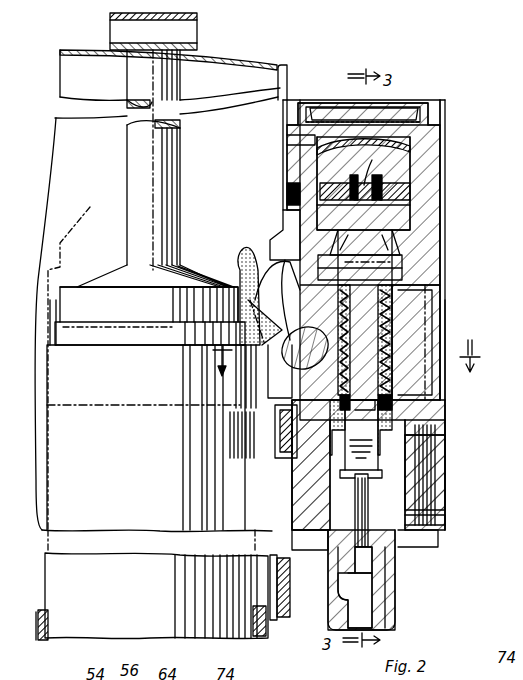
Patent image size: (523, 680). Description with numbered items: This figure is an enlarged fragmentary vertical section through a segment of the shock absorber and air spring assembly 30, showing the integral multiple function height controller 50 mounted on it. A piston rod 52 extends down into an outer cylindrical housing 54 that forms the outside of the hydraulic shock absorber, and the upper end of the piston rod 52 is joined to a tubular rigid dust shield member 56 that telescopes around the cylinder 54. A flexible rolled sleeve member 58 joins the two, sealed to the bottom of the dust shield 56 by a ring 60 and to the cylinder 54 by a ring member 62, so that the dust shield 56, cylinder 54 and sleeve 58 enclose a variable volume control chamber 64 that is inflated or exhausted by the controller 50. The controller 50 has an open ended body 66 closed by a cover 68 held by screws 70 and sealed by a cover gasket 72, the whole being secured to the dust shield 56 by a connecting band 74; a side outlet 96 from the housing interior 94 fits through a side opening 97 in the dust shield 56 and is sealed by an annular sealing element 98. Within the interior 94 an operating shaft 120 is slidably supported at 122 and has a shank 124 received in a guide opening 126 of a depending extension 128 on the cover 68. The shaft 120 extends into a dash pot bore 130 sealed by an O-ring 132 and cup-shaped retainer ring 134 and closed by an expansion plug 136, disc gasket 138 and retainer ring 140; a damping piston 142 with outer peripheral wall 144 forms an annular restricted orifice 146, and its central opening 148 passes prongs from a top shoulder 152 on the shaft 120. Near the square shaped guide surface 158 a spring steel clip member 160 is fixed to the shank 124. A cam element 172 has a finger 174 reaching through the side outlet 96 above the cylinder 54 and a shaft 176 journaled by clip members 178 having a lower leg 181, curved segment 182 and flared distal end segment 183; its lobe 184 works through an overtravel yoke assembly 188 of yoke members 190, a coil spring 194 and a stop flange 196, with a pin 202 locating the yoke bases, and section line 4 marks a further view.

The shock absorber and air spring assembly 30 is at (230, 48).
The integral multiple function height controller 50 is at (458, 159).
The piston rod 52 is at (145, 164).
The outer cylindrical housing 54 is at (78, 580).
The dust shield member 56 is at (288, 68).
The flexible rolled sleeve member 58 is at (46, 626).
The ring 60 is at (292, 580).
The ring member 62 is at (36, 640).
The control chamber 64 is at (80, 120).
The body 66 is at (442, 250).
The cover 68 is at (438, 520).
The screws 70 is at (420, 492).
The cover gasket 72 is at (438, 460).
The connecting band 74 is at (448, 398).
The housing interior 94 is at (410, 445).
The side outlet 96 is at (280, 262).
The side opening 97 is at (288, 452).
The annular sealing element 98 is at (285, 222).
The operating shaft 120 is at (395, 278).
The slidable support 122 is at (363, 207).
The shank 124 is at (374, 555).
The guide opening 126 is at (372, 580).
The depending extension 128 is at (380, 605).
The dash pot bore 130 is at (300, 140).
The O-ring 132 is at (400, 252).
The cup-shaped retainer ring 134 is at (338, 264).
The expansion plug 136 is at (344, 138).
The disc gasket 138 is at (425, 128).
The cup-shaped retainer ring 140 is at (425, 116).
The damping piston 142 is at (410, 192).
The outer peripheral wall 144 is at (292, 190).
The annular restricted orifice 146 is at (410, 196).
The central opening 148 is at (363, 183).
The top shoulder 152 is at (400, 248).
The square shaped guide surface 158 is at (437, 427).
The clip member 160 is at (378, 512).
The cam element 172 is at (233, 293).
The finger 174 is at (238, 268).
The shaft 176 is at (256, 406).
The clip member 178 is at (262, 434).
The lower leg 181 is at (343, 427).
The curved segment 182 is at (290, 342).
The outwardly flared distal end segment 183 is at (250, 310).
The ear or lobe 184 is at (447, 326).
The overtravel yoke assembly 188 is at (400, 340).
The yoke member 190 is at (408, 409).
The coil spring 194 is at (392, 315).
The stop flange 196 is at (350, 440).
The pin 202 is at (410, 395).
The section line 4 is at (344, 370).